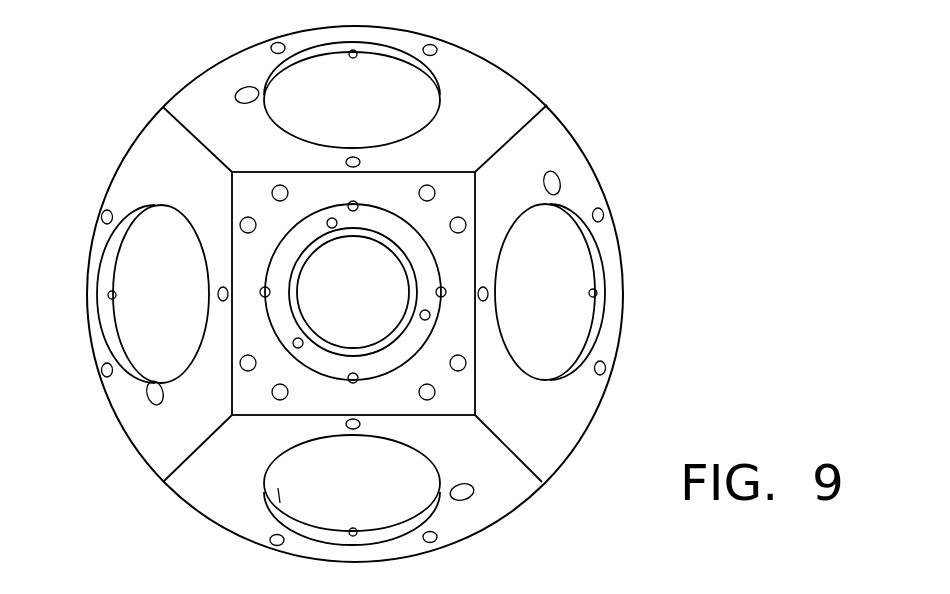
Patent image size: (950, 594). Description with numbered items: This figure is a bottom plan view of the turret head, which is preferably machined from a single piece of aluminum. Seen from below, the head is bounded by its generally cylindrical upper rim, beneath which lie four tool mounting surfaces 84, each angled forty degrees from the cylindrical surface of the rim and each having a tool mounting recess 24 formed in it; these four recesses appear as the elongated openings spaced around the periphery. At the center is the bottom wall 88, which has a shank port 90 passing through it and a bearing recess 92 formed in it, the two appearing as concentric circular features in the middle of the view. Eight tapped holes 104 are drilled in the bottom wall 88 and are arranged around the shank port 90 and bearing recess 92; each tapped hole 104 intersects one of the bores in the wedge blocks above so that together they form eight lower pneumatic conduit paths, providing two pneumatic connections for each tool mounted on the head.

The tool mounting surface 84 is at (196, 88).
The tool mounting recess 24 is at (383, 70).
The bottom wall 88 is at (232, 210).
The tapped hole 104 is at (278, 190).
The bearing recess 92 is at (278, 327).
The shank port 90 is at (300, 294).